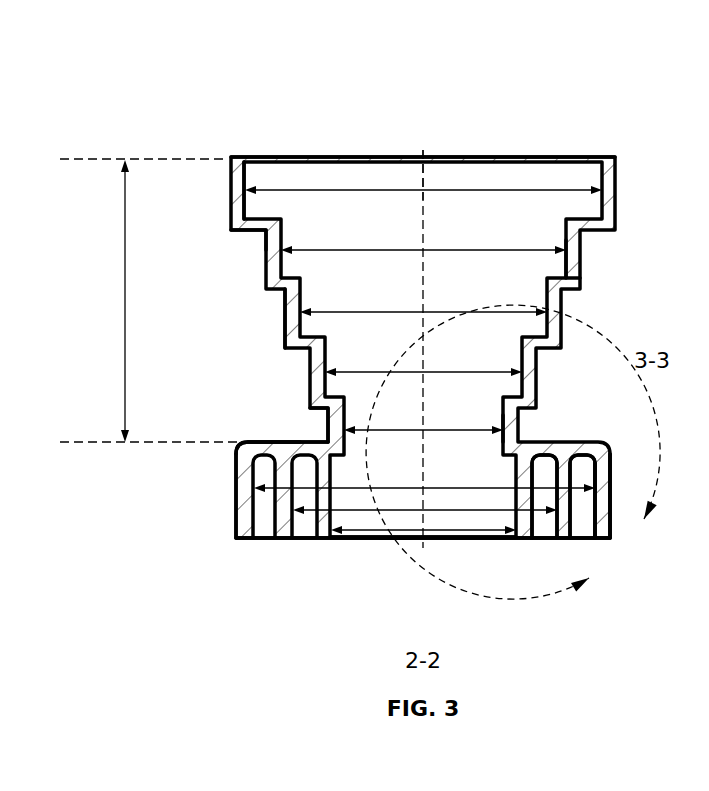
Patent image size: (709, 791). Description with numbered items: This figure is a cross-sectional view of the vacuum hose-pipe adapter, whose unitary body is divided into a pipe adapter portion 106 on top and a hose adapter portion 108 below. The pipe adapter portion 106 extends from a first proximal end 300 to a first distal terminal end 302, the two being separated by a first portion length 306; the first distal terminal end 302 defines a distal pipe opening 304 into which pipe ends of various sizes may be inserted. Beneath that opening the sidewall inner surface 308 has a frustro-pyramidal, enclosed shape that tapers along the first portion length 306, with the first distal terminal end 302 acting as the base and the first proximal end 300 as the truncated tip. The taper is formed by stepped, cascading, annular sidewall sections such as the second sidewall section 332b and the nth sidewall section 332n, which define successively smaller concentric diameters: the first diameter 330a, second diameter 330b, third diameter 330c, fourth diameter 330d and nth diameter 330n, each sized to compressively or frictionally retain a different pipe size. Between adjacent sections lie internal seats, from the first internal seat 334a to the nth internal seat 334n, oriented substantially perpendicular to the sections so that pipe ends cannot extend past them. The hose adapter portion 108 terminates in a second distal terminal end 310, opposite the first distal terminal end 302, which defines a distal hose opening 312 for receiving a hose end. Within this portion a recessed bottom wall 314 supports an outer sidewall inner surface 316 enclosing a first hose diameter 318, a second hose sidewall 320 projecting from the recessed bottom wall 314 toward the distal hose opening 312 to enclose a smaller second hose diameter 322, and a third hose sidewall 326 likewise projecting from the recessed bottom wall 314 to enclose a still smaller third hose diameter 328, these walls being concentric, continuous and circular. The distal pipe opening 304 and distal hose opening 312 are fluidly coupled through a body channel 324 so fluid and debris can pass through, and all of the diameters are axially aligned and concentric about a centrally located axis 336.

The first proximal end 300 is at (312, 430).
The first distal terminal end 302 is at (218, 150).
The distal pipe opening 304 is at (378, 146).
The first portion length 306 is at (124, 254).
The sidewall inner surface 308 is at (255, 165).
The centrally located axis 336 is at (423, 177).
The first diameter 330a is at (553, 191).
The second diameter 330b is at (532, 251).
The third diameter 330c is at (518, 313).
The fourth diameter 330d is at (492, 373).
The nth tapering diameter 330n is at (478, 431).
The second sidewall section 332b is at (574, 256).
The nth sidewall section 332n is at (512, 423).
The first internal seat 334a is at (253, 228).
The nth internal seat 334n is at (323, 415).
The pipe adapter portion 106 is at (262, 308).
The recessed bottom wall 314 is at (248, 447).
The hose adapter portion 108 is at (220, 518).
The second distal terminal end 310 is at (224, 543).
The first hose diameter 318 is at (270, 490).
The second hose sidewall 320 is at (287, 530).
The second hose diameter 322 is at (313, 502).
The body channel 324 is at (490, 485).
The third hose sidewall 326 is at (523, 540).
The sidewall inner surface 316 is at (583, 534).
The third hose diameter 328 is at (377, 541).
The distal hose opening 312 is at (393, 555).